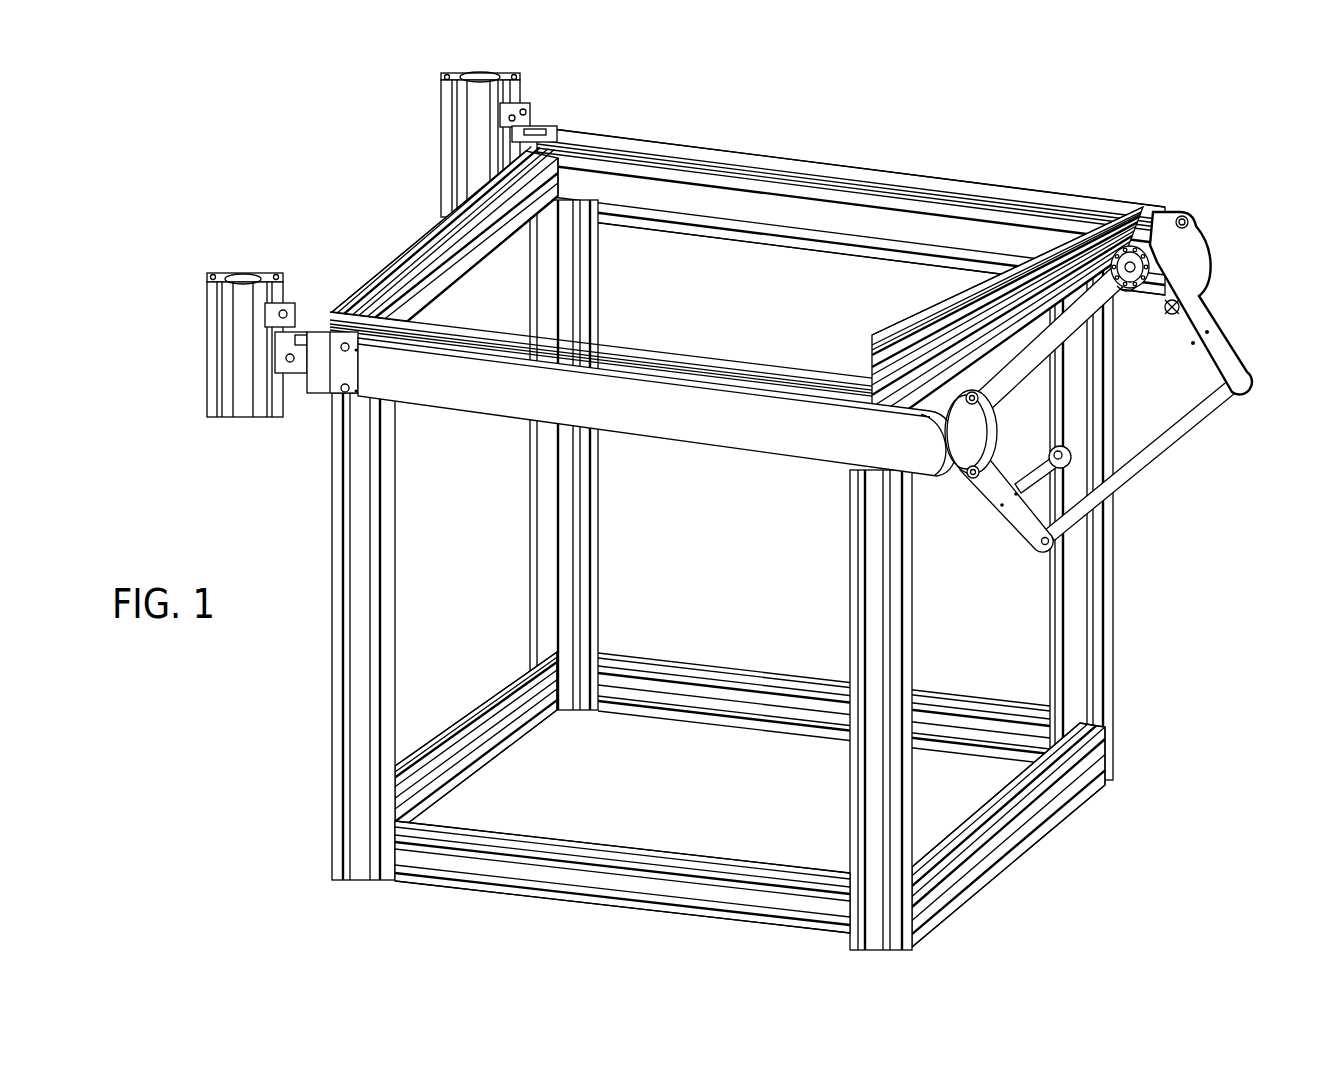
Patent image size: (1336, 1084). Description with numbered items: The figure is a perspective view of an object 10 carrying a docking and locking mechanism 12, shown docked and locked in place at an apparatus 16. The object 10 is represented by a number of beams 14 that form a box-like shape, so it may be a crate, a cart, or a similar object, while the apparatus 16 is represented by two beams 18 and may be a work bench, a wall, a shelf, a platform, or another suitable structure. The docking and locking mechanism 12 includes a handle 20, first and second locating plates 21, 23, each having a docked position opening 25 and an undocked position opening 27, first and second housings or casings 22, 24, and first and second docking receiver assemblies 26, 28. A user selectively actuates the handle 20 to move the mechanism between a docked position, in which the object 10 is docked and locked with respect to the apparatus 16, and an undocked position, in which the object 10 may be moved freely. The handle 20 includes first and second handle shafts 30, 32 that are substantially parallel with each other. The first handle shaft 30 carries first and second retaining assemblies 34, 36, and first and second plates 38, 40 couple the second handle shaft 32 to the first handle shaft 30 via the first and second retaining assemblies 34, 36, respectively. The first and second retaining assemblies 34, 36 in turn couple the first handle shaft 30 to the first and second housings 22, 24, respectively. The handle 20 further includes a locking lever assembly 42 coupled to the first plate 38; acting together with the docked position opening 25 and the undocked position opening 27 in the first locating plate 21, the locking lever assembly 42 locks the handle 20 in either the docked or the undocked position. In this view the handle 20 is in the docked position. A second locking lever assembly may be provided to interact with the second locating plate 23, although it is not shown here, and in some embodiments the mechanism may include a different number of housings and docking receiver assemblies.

The object 10 is at (388, 247).
The docking and locking mechanism 12 is at (1077, 376).
The beams 14 is at (747, 533).
The apparatus 16 is at (197, 380).
The beams 18 is at (349, 264).
The handle 20 is at (1118, 489).
The first locating plate 21 is at (997, 432).
The first housing 22 is at (740, 432).
The second locating plate 23 is at (1195, 285).
The second housing 24 is at (920, 176).
The docked position opening 25 is at (1170, 315).
The first docking receiver assembly 26 is at (308, 312).
The undocked position opening 27 is at (1183, 240).
The second docking receiver assembly 28 is at (545, 108).
The first handle shaft 30 is at (1130, 256).
The second handle shaft 32 is at (1212, 408).
The first retaining assembly 34 is at (950, 385).
The second retaining assembly 36 is at (1125, 297).
The first plate 38 is at (1020, 517).
The second plate 40 is at (1228, 360).
The locking lever assembly 42 is at (1075, 449).